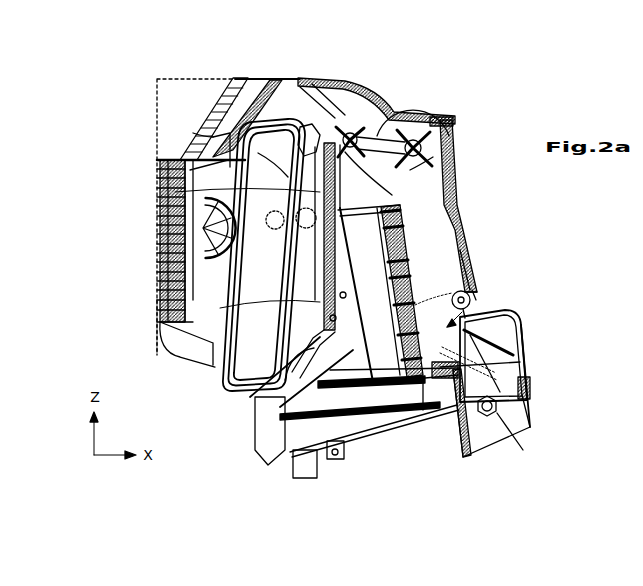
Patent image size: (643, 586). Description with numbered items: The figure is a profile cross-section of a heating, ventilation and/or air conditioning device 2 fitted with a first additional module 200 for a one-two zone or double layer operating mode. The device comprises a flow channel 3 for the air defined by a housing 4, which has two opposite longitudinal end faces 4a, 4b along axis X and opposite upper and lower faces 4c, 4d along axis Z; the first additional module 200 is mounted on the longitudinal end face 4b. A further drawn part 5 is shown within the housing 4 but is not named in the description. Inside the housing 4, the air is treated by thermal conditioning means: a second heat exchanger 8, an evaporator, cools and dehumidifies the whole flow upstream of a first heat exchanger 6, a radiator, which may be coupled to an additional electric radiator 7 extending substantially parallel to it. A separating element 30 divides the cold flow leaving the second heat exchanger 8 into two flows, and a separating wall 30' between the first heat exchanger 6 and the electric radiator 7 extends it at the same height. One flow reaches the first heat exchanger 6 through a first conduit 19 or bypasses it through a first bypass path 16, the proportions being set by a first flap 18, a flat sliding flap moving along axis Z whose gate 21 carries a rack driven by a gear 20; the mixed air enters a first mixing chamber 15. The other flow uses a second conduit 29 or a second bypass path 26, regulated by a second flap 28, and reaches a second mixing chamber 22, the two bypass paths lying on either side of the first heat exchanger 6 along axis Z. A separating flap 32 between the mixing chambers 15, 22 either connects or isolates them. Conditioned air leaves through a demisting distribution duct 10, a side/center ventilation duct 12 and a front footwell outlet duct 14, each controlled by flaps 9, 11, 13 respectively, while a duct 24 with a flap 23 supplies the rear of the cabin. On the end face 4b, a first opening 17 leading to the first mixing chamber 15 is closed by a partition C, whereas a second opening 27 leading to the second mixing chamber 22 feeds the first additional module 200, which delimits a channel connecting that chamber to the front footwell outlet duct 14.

The heating, ventilation and/or air conditioning device 2 is at (135, 91).
The flow channel 3 is at (292, 100).
The housing 4 is at (218, 105).
The longitudinal end face 4a is at (100, 285).
The longitudinal end face 4b is at (535, 210).
The upper face 4c is at (261, 58).
The lower face 4d is at (415, 482).
The mounting plate 5 is at (405, 176).
The first heat exchanger 6 is at (385, 390).
The additional electric radiator 7 is at (432, 400).
The second heat exchanger 8 is at (222, 380).
The flap 9 is at (338, 125).
The air flow distribution duct 10 is at (362, 108).
The flap 11 is at (456, 142).
The air flow distribution duct 12 is at (427, 110).
The flap 13 is at (530, 395).
The front footwell outlet duct 14 is at (512, 365).
The first air flow mixing chamber 15 is at (432, 160).
The first bypass path 16 is at (360, 194).
The first opening 17 is at (458, 268).
The first flap 18 is at (193, 180).
The first conduit 19 is at (341, 263).
The gear 20 is at (290, 213).
The gate 21 is at (192, 133).
The second mixing chamber 22 is at (480, 297).
The flap 23 is at (542, 430).
The duct 24 is at (485, 445).
The second bypass path 26 is at (365, 397).
The second opening 27 is at (517, 328).
The second flap 28 is at (262, 410).
The second conduit 29 is at (353, 353).
The separating element 30 is at (215, 333).
The separating wall 30' is at (433, 277).
The separating flap 32 is at (474, 284).
The first additional module 200 is at (545, 343).
The partition C is at (467, 270).